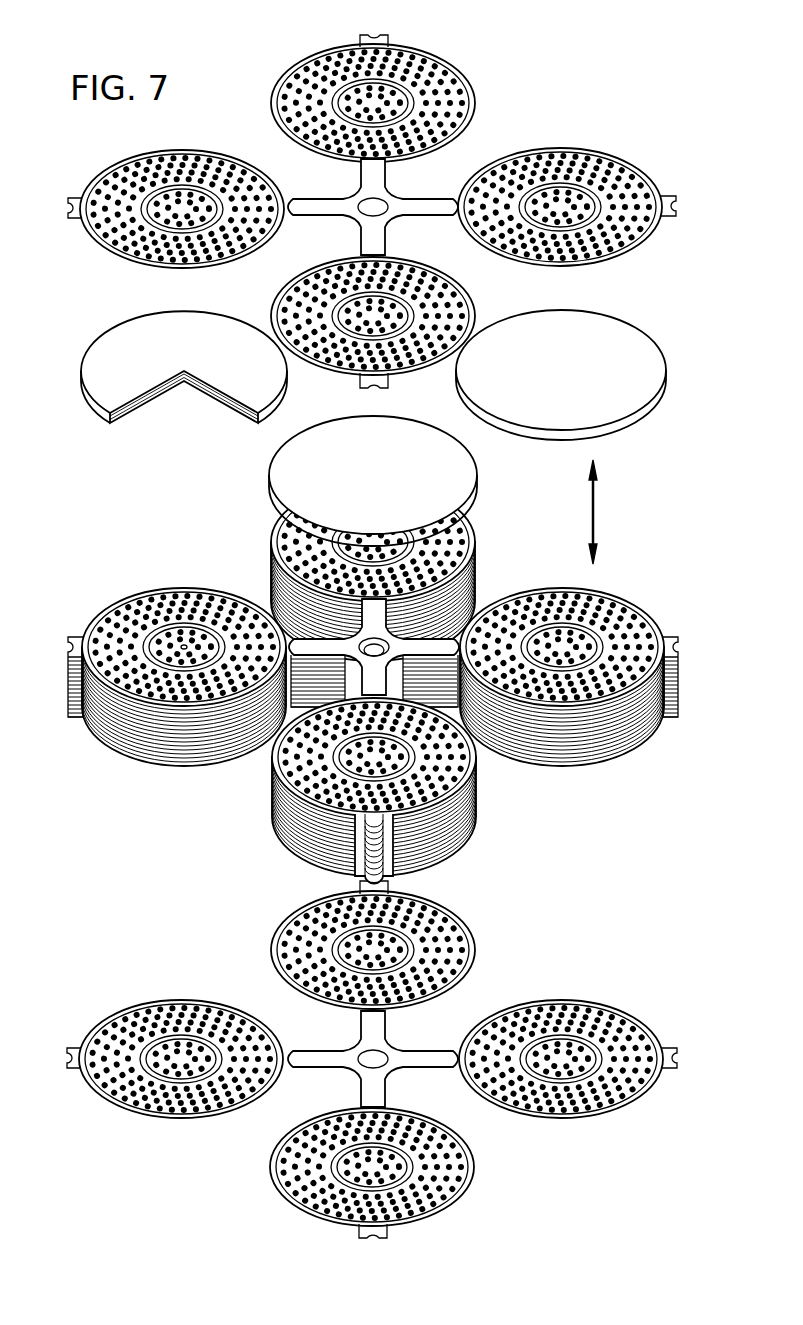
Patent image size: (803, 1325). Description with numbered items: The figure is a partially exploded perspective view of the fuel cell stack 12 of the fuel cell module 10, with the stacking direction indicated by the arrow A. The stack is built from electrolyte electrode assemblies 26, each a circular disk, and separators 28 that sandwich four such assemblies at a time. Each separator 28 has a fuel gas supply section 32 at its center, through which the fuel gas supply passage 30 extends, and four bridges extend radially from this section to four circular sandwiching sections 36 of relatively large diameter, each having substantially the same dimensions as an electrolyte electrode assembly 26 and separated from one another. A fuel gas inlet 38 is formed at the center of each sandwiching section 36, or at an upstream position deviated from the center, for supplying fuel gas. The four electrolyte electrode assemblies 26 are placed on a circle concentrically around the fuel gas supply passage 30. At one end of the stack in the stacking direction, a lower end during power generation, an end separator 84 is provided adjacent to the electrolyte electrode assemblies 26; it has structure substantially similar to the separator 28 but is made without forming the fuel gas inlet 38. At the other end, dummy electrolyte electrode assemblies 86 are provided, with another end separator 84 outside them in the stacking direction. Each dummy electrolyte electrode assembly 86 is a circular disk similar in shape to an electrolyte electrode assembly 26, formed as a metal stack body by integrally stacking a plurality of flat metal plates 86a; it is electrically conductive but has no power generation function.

The fuel cell module 10 is at (582, 83).
The fuel cell stack 12 is at (368, 636).
The electrolyte electrode assembly 26 is at (373, 634).
The separator 28 is at (602, 582).
The fuel gas supply passage 30 is at (372, 204).
The fuel gas supply section 32 is at (382, 189).
The sandwiching section 36 is at (588, 160).
The fuel gas inlet 38 is at (176, 636).
The end separator 84 is at (468, 70).
The dummy electrolyte electrode assembly 86 is at (173, 361).
The flat metal plate 86a is at (121, 395).